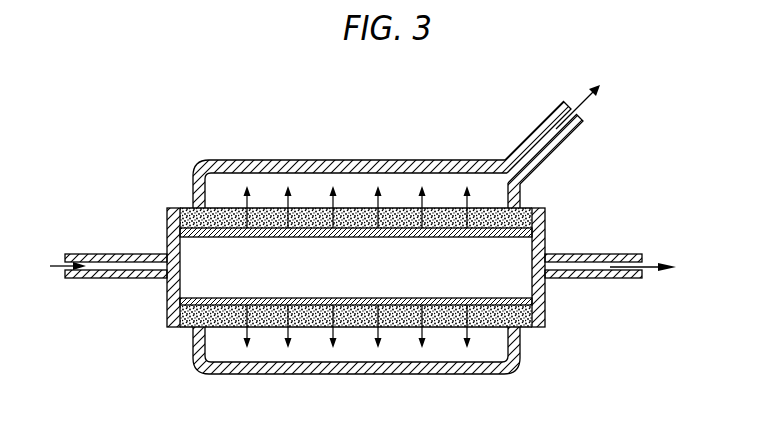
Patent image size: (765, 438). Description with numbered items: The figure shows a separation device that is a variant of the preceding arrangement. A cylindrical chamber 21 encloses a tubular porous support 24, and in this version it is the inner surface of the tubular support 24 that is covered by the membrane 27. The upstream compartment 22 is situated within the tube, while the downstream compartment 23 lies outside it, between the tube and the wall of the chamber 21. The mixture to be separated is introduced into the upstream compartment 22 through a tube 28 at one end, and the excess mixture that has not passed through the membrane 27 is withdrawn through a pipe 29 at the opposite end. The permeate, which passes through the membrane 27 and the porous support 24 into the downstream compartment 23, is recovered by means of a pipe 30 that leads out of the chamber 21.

The chamber 21 is at (423, 377).
The upstream compartment 22 is at (186, 273).
The downstream compartment 23 is at (283, 357).
The porous support 24 is at (185, 210).
The membrane 27 is at (352, 298).
The tube 28 is at (67, 278).
The pipe 29 is at (638, 276).
The pipe 30 is at (567, 113).